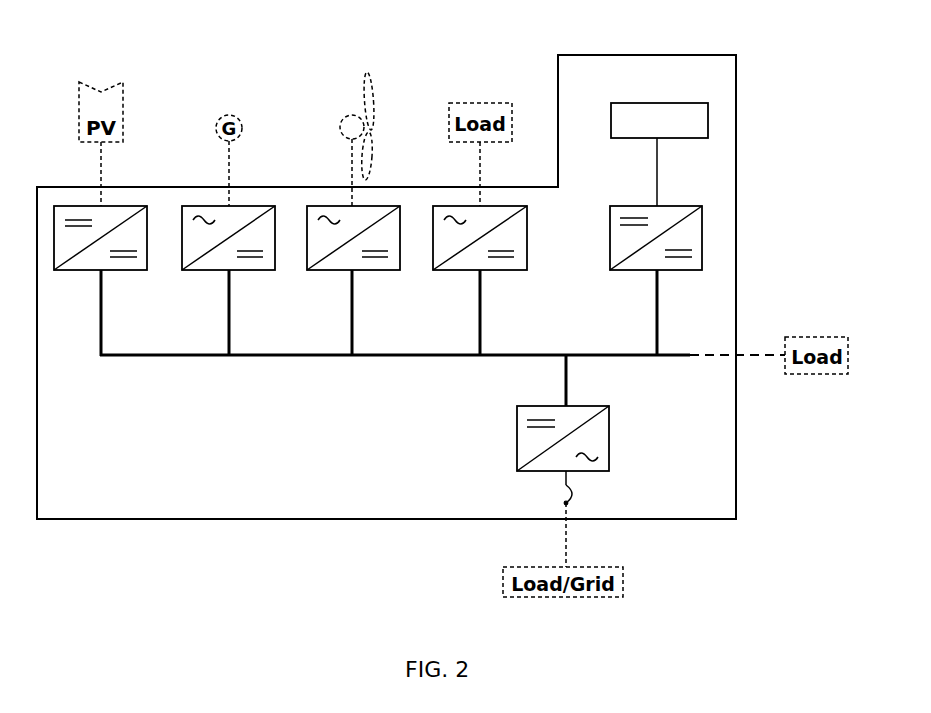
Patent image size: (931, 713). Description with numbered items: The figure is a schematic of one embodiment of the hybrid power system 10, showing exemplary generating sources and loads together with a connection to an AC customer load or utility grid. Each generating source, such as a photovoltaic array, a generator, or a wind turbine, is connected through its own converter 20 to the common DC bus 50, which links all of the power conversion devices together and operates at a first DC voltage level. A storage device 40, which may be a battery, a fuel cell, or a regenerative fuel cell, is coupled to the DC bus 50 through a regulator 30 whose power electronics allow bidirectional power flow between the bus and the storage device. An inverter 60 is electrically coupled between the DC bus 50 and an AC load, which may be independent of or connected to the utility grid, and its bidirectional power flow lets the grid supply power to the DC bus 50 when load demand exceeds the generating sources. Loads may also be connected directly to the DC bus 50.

The hybrid power system 10 is at (746, 57).
The converter 20 is at (123, 271).
The regulator 30 is at (678, 272).
The storage device 40 is at (642, 102).
The common DC bus 50 is at (302, 358).
The inverter 60 is at (612, 437).